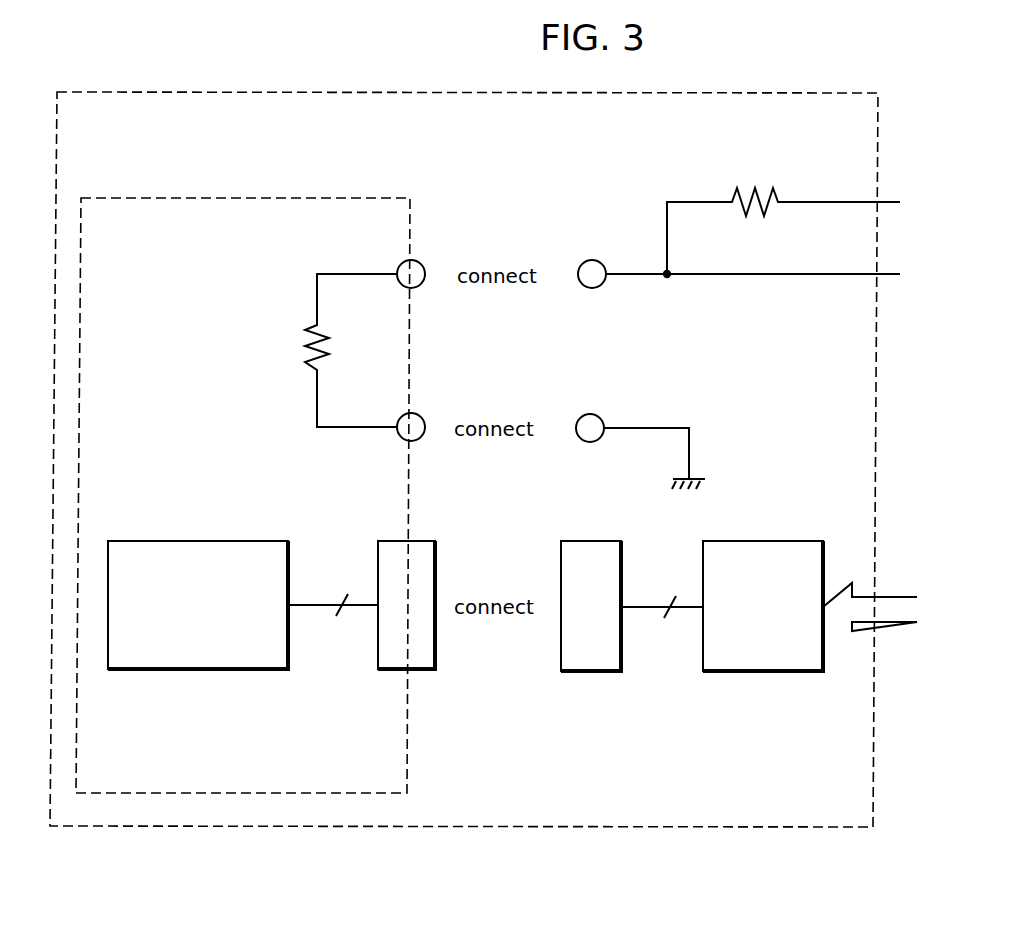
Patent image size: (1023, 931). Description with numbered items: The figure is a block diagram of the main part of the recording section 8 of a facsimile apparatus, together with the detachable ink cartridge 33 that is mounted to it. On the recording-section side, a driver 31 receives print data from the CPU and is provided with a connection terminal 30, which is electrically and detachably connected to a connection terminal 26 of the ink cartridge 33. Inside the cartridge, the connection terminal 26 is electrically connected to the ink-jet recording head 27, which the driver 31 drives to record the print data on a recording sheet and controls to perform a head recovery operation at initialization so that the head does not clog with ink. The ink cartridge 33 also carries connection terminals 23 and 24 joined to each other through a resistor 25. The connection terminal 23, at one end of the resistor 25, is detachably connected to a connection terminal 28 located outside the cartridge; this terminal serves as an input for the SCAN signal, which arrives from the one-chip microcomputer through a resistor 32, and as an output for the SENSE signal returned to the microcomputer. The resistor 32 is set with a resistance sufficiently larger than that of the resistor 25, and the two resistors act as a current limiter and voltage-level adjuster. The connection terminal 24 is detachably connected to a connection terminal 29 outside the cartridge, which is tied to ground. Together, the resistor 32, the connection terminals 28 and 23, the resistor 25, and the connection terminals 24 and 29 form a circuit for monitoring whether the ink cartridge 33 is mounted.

The recording section 8 is at (368, 92).
The ink cartridge 33 is at (258, 198).
The connection terminal 23 is at (417, 262).
The connection terminal 24 is at (414, 414).
The resistor 25 is at (305, 343).
The connection terminal 26 is at (428, 670).
The ink-jet recording head 27 is at (205, 670).
The connection terminal 28 is at (594, 260).
The connection terminal 29 is at (592, 414).
The connection terminal 30 is at (612, 672).
The driver 31 is at (765, 672).
The resistor 32 is at (755, 186).